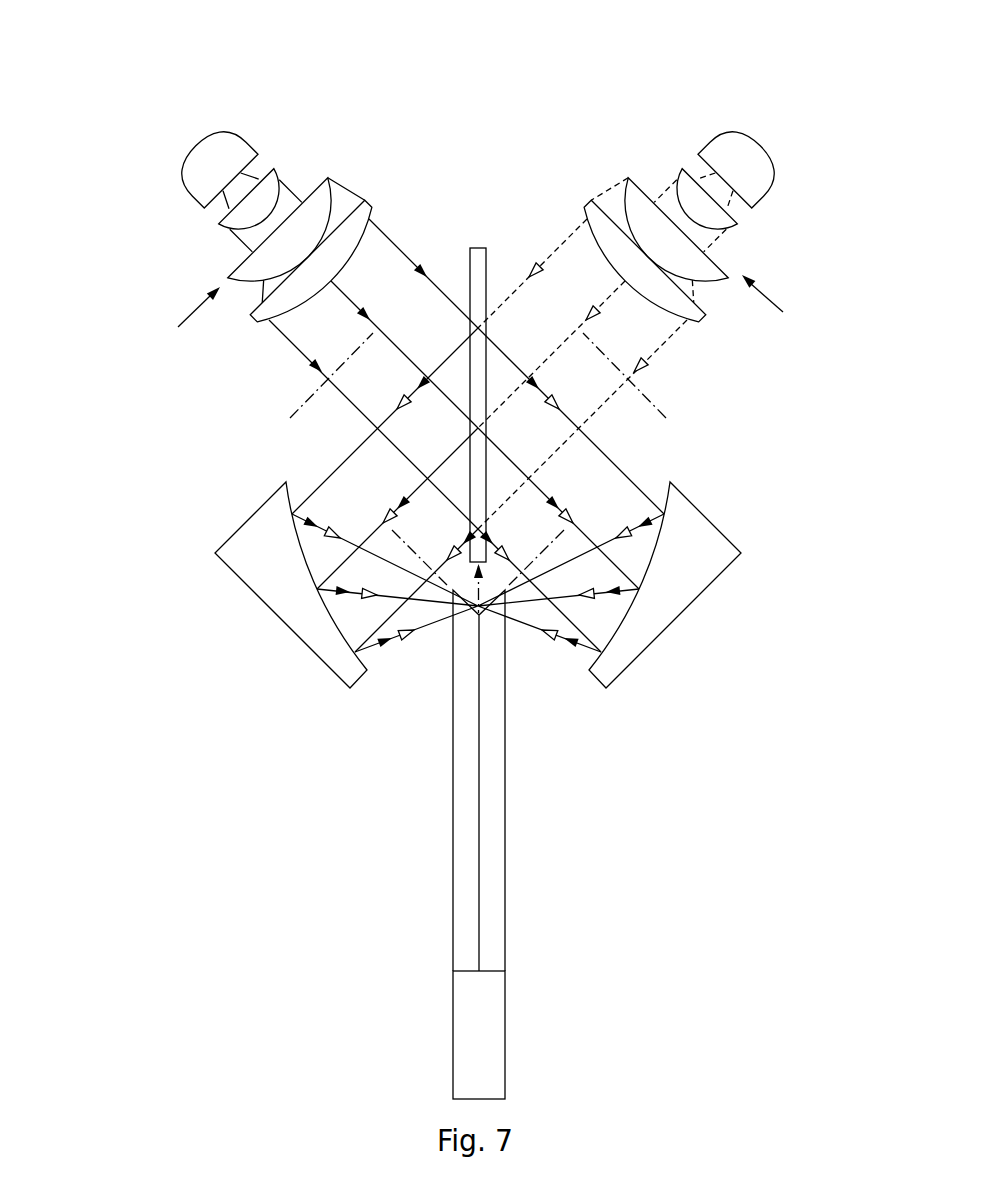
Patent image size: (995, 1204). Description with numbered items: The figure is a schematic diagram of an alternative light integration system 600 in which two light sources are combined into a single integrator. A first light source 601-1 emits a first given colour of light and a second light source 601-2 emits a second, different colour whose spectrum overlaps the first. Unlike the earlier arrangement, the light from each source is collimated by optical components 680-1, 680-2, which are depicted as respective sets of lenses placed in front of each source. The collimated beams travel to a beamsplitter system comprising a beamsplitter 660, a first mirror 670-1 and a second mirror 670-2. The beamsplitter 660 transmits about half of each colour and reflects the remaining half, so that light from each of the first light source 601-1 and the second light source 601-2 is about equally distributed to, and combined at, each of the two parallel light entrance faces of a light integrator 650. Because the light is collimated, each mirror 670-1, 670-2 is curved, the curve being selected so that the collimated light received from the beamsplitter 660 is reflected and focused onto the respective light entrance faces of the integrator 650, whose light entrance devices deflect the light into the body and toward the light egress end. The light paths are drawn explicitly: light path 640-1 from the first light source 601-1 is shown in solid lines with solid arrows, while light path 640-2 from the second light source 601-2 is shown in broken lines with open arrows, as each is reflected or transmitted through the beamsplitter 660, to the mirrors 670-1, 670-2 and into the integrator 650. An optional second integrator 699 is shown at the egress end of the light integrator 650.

The system 600 is at (458, 571).
The first light source 601-1 is at (183, 168).
The second light source 601-2 is at (773, 162).
The light path 640-1 is at (297, 348).
The light path 640-2 is at (659, 348).
The light integrator 650 is at (502, 937).
The beamsplitter 660 is at (473, 240).
The first mirror 670-1 is at (258, 583).
The second mirror 670-2 is at (712, 567).
The optical component 680-1 is at (170, 324).
The optical component 680-2 is at (790, 310).
The second integrator 699 is at (453, 1025).